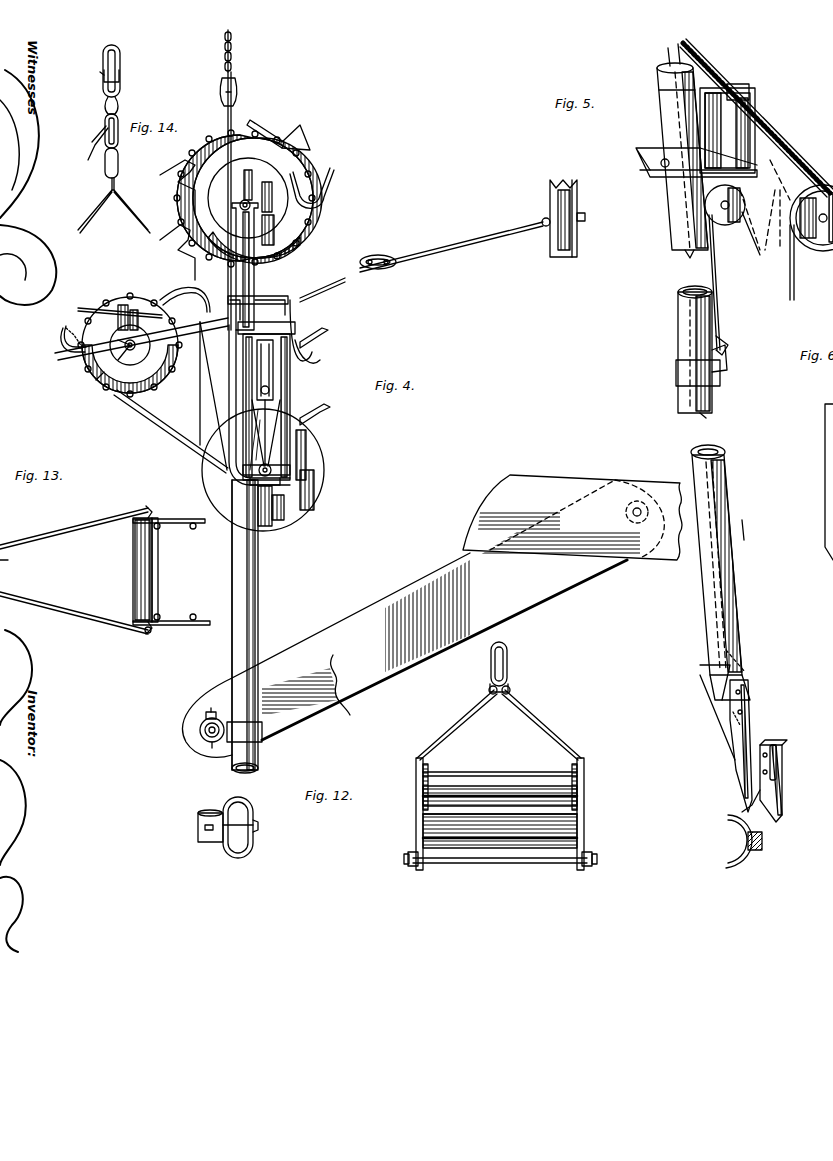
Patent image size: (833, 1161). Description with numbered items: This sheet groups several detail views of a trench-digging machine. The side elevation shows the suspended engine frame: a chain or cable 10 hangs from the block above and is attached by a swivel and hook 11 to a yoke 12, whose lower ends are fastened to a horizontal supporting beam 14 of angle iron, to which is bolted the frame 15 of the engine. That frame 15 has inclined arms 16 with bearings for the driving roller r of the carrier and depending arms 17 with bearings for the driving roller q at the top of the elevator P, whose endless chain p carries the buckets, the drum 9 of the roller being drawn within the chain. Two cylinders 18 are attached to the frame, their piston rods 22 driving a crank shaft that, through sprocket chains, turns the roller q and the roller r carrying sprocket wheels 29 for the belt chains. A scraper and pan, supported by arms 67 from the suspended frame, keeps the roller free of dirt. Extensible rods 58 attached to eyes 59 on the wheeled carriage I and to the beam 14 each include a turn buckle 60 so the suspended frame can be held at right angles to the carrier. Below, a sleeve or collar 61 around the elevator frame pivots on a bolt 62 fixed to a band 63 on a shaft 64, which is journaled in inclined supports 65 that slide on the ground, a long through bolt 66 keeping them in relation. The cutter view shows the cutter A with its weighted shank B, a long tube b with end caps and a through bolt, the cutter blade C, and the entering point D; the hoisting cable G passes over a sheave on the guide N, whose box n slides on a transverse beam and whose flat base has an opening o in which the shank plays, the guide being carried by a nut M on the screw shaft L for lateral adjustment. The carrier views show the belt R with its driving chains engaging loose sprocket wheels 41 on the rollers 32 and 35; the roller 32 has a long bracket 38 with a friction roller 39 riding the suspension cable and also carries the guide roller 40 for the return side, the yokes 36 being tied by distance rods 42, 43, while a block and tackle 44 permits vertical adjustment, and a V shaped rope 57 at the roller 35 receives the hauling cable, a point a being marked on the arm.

In FIG. 4, the chain or cable 10 is at (232, 62).
In FIG. 4, the swivel and hook 11 is at (236, 91).
In FIG. 4, the yoke 12 is at (228, 132).
In FIG. 4, the drum 9 is at (280, 158).
In FIG. 4, the endless chain p is at (180, 278).
In FIG. 4, the horizontal supporting beam 14 is at (270, 312).
In FIG. 4, the cylinder 18 is at (292, 315).
In FIG. 4, the piston rods 22 is at (273, 372).
In FIG. 4, the frame of the engine 15 is at (234, 405).
In FIG. 4, the depending arms 17 is at (213, 396).
In FIG. 4, the inclined arms 16 is at (195, 325).
In FIG. 4, the sprocket wheels 29 is at (145, 395).
In FIG. 4, the arms 67 is at (60, 342).
In FIG. 4, the box n is at (80, 305).
In FIG. 5, the box n is at (755, 125).
In FIG. 4, the driving roller of the horizontal carrier belt r is at (95, 380).
In FIG. 4, the post Q is at (232, 636).
In FIG. 4, the elevator P is at (253, 626).
In FIG. 4, the sleeve or collar 61 is at (262, 738).
In FIG. 4, the bolt 62 is at (250, 835).
In FIG. 4, the band 63 is at (200, 730).
In FIG. 4, the shaft or bar 64 is at (212, 745).
In FIG. 4, the inclined supports 65 is at (345, 658).
In FIG. 4, the through bolt 66 is at (199, 709).
In FIG. 4, the wheeled carriage I is at (572, 517).
In FIG. 4, the extensible rods 58 is at (460, 245).
In FIG. 4, the eyes 59 is at (540, 205).
In FIG. 4, the turn buckle 60 is at (390, 268).
In FIG. 13, the V shaped rope 57 is at (68, 610).
In FIG. 13, the arm end a is at (5, 560).
In FIG. 13, the carrier belt R is at (135, 570).
In FIG. 13, the loose sprocket wheels 41 is at (132, 522).
In FIG. 12, the loose sprocket wheels 41 is at (428, 768).
In FIG. 13, the rear delivery roller 35 is at (142, 636).
In FIG. 14, the bracket 38 is at (122, 50).
In FIG. 12, the bracket 38 is at (508, 646).
In FIG. 14, the friction roller 39 is at (100, 80).
In FIG. 12, the friction roller 39 is at (490, 672).
In FIG. 14, the block and tackle 44 is at (115, 137).
In FIG. 14, the yokes 36 is at (95, 210).
In FIG. 12, the yokes 36 is at (553, 727).
In FIG. 12, the idler roller 32 is at (487, 790).
In FIG. 12, the guide roller 40 is at (570, 822).
In FIG. 12, the distance rod 42 is at (404, 858).
In FIG. 12, the distance rod 43 is at (596, 858).
In FIG. 5, the tube b is at (682, 163).
In FIG. 6, the tube b is at (712, 578).
In FIG. 5, the opening o is at (660, 150).
In FIG. 5, the guide N is at (639, 182).
In FIG. 5, the nut or bearing M is at (749, 90).
In FIG. 5, the screw threaded shaft L is at (778, 148).
In FIG. 5, the hoisting cable G is at (720, 274).
In FIG. 6, the shank or bar B is at (727, 478).
In FIG. 6, the cutter A is at (746, 529).
In FIG. 6, the cutter blade C is at (738, 738).
In FIG. 6, the entering point D is at (745, 790).